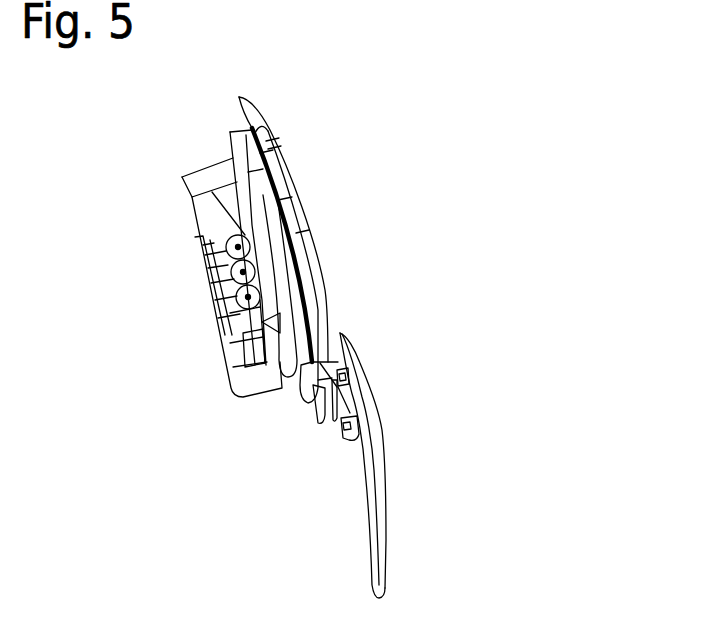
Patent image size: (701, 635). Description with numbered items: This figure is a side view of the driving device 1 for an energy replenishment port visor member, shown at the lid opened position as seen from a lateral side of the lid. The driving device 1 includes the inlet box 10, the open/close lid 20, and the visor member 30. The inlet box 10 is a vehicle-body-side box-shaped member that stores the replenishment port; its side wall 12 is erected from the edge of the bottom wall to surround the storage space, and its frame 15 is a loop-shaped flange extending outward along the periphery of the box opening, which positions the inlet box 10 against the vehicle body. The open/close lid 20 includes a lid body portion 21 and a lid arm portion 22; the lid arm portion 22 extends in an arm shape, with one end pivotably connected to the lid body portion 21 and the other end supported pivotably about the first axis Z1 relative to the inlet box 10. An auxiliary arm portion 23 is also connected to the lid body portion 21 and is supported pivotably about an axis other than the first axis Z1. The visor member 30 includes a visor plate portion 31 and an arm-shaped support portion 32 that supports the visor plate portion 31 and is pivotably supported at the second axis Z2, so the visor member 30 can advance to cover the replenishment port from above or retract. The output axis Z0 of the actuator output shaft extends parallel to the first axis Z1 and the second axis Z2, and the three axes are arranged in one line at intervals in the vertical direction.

The driving device 1 is at (227, 450).
The inlet box 10 is at (283, 255).
The side wall 12 is at (243, 230).
The frame 15 is at (312, 290).
The open/close lid 20 is at (523, 402).
The lid body portion 21 is at (376, 474).
The lid arm portion 22 is at (350, 368).
The auxiliary arm portion 23 is at (338, 405).
The visor member 30 is at (92, 130).
The visor plate portion 31 is at (205, 173).
The support portion 32 is at (207, 218).
The output axis Z0 is at (243, 272).
The first axis Z1 is at (248, 297).
The second axis Z2 is at (238, 247).